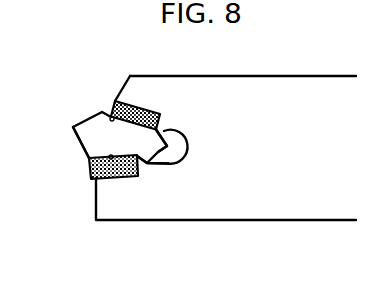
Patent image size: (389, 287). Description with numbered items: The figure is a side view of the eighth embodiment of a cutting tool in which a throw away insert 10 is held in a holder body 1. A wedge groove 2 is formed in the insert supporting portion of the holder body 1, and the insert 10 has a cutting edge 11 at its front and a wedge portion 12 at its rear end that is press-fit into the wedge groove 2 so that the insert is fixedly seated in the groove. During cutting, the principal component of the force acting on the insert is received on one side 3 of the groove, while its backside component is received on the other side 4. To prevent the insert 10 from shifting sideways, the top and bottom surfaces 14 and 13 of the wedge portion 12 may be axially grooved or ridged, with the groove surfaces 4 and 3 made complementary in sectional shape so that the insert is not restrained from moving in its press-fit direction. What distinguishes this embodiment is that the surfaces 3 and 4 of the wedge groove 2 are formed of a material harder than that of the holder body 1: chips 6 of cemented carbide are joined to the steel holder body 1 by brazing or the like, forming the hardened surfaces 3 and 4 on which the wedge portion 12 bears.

The holder body 1 is at (301, 74).
The wedge groove 2 is at (165, 157).
The one side of the groove 3 is at (112, 160).
The other side of the groove 4 is at (110, 115).
The chips of cemented carbide 6 is at (133, 101).
The throw away insert 10 is at (164, 133).
The cutting edge 11 is at (70, 127).
The wedge portion 12 is at (104, 135).
The bottom surface of the wedge portion 13 is at (143, 162).
The top surface of the wedge portion 14 is at (143, 113).